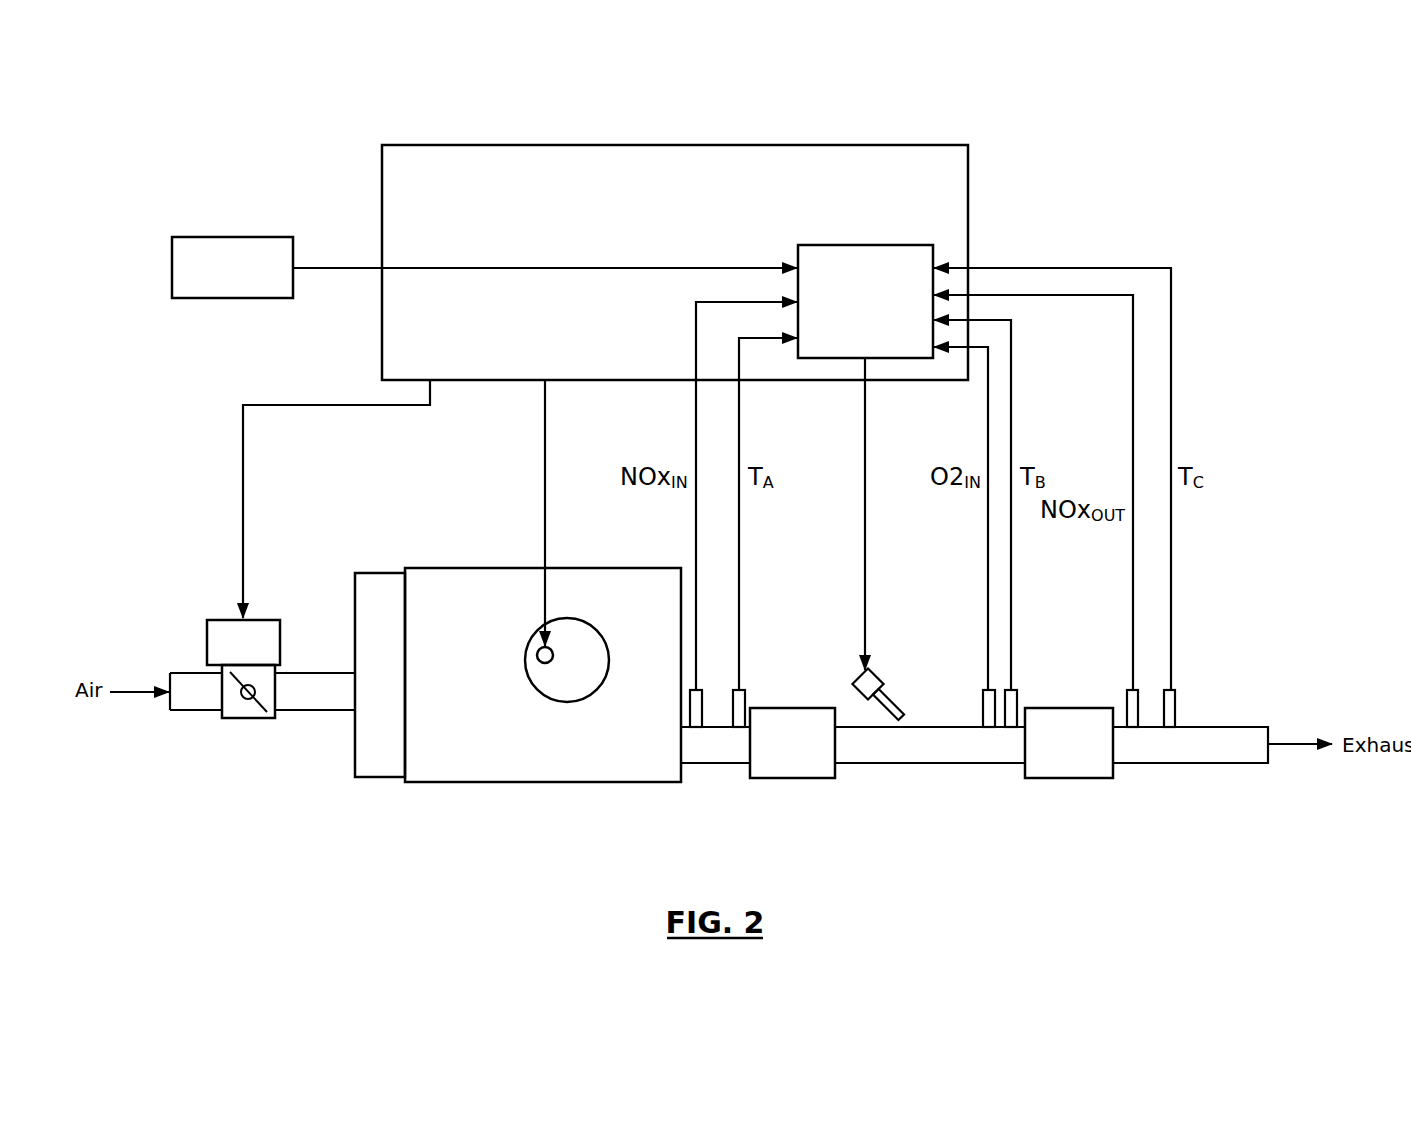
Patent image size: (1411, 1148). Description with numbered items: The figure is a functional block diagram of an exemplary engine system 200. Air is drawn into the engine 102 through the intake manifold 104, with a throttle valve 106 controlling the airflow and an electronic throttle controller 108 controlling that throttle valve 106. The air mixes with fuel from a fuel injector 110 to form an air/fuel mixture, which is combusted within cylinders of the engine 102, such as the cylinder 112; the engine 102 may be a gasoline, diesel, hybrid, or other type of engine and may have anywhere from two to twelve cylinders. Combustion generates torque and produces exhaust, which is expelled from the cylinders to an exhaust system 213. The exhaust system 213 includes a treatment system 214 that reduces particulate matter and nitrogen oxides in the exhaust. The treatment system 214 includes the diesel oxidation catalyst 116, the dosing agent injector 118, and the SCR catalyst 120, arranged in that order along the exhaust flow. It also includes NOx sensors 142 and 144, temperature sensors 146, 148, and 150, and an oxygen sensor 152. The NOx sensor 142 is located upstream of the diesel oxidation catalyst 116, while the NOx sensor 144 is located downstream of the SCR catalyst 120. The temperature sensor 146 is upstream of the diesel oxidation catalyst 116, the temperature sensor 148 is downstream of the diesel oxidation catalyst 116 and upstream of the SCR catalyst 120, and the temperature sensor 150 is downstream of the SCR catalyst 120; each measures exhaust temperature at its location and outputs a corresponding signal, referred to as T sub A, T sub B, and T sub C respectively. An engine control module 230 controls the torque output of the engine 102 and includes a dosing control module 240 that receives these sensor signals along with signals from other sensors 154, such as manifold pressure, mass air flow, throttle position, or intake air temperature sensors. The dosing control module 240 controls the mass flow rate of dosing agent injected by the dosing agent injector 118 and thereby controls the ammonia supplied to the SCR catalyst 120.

The engine system 200 is at (213, 88).
The engine control module 230 is at (683, 146).
The dosing control module 240 is at (868, 245).
The other sensors 154 is at (235, 237).
The electronic throttle controller 108 is at (229, 620).
The throttle valve 106 is at (248, 718).
The intake manifold 104 is at (378, 573).
The engine 102 is at (470, 568).
The fuel injector 110 is at (537, 651).
The cylinder 112 is at (565, 700).
The diesel oxidation catalyst 116 is at (798, 708).
The dosing agent injector 118 is at (857, 672).
The SCR catalyst 120 is at (1080, 778).
The NOx sensor 142 is at (693, 763).
The temperature sensor 146 is at (740, 763).
The oxygen sensor 152 is at (990, 763).
The temperature sensor 148 is at (1011, 763).
The NOx sensor 144 is at (1122, 693).
The temperature sensor 150 is at (1169, 763).
The exhaust system 213 is at (1225, 600).
The treatment system 214 is at (1098, 882).